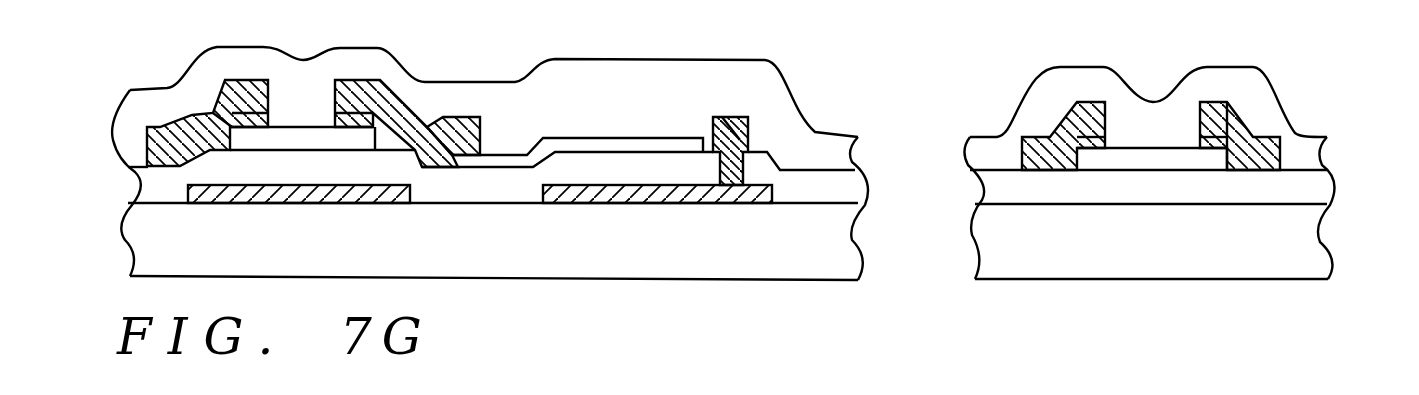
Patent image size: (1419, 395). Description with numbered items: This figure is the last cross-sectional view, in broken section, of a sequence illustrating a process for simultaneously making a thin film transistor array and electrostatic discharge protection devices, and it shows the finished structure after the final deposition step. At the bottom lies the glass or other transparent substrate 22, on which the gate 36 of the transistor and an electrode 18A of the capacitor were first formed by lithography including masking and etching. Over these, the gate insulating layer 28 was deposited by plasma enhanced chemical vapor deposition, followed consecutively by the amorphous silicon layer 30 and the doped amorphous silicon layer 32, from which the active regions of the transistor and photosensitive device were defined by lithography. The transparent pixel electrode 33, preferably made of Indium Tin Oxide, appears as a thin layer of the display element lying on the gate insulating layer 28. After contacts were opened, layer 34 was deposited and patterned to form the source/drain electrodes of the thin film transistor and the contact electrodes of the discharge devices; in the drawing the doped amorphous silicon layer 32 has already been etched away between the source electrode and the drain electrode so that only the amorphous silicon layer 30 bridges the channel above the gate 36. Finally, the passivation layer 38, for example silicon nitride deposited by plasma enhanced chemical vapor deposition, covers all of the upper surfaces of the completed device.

The electrode of the capacitor 18A is at (763, 185).
The transparent substrate 22 is at (1027, 272).
The gate insulating layer 28 is at (632, 163).
The amorphous silicon layer 30 is at (240, 143).
The doped amorphous silicon layer 32 is at (222, 95).
The transparent pixel electrode 33 is at (503, 160).
The layer forming source/drain electrodes 34 is at (385, 102).
The gate 36 is at (370, 195).
The passivation layer 38 is at (750, 90).